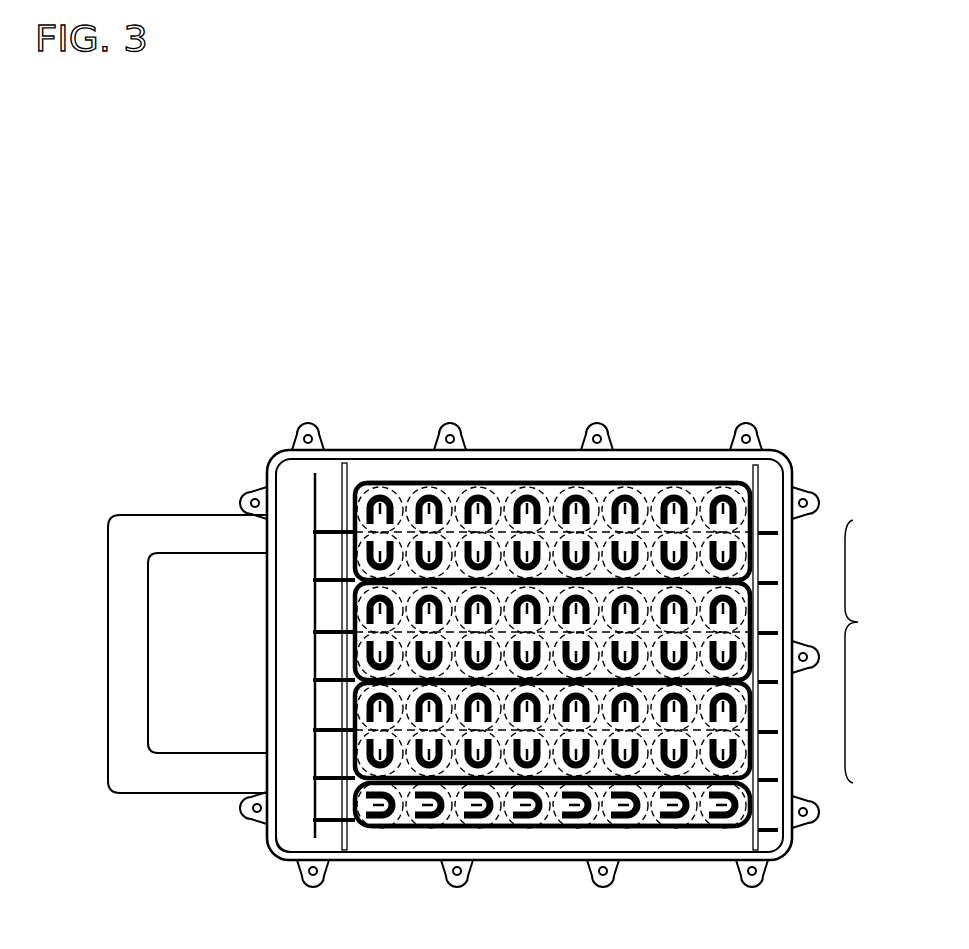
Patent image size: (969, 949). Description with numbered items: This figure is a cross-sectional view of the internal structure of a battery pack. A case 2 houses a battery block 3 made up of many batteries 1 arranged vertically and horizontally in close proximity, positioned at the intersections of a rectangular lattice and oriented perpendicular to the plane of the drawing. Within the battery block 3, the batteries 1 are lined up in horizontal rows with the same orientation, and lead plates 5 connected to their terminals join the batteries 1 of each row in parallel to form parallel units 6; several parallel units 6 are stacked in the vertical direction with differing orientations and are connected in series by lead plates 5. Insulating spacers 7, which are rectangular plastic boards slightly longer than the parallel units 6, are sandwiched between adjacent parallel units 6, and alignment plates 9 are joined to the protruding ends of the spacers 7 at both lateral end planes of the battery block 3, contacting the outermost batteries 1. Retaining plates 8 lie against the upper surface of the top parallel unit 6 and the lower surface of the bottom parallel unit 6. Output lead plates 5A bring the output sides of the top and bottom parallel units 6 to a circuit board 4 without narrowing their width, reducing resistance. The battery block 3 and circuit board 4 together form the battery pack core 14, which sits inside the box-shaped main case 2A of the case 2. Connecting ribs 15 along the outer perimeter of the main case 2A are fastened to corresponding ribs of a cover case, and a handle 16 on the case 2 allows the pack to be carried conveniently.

The battery 1 is at (605, 470).
The case 2 is at (360, 430).
The main case 2A is at (400, 452).
The battery block 3 is at (864, 651).
The circuit board 4 is at (340, 597).
The lead plate 5 is at (495, 483).
The output lead plate 5A is at (505, 835).
The parallel unit 6 is at (757, 518).
The spacer 7 is at (330, 578).
The retaining plate 8 is at (680, 483).
The alignment plate 9 is at (335, 650).
The battery pack core 14 is at (300, 830).
The connecting rib 15 is at (308, 428).
The handle 16 is at (122, 698).